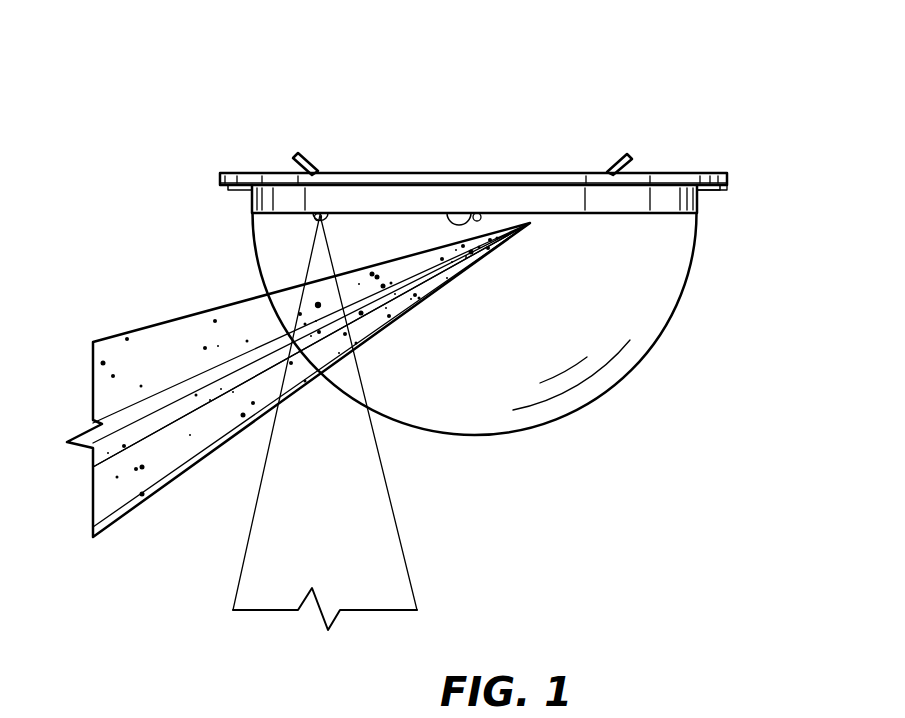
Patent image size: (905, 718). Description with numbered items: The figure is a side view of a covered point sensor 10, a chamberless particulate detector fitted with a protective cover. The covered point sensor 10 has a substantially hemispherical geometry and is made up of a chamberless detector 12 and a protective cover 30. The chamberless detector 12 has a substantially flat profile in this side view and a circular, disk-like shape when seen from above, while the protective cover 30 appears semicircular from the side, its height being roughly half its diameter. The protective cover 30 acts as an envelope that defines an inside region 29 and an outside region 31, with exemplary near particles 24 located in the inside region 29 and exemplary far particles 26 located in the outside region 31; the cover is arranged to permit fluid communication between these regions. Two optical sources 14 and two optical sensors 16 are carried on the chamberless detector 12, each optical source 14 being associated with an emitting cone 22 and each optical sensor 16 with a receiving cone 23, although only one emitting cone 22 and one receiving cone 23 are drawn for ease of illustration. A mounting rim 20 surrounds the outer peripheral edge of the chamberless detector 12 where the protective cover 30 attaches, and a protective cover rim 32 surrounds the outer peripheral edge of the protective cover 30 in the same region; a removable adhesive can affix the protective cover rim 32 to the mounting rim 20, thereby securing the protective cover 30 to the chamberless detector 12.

The covered point sensor 10 is at (130, 82).
The chamberless detector 12 is at (558, 173).
The optical sources 14 is at (300, 154).
The optical sensors 16 is at (333, 223).
The mounting rim 20 is at (727, 190).
The emitting cone 22 is at (210, 310).
The receiving cone 23 is at (248, 546).
The near particles 24 is at (320, 306).
The far particles 26 is at (306, 375).
The inside region 29 is at (628, 264).
The protective cover 30 is at (593, 402).
The outside region 31 is at (664, 373).
The protective cover rim 32 is at (703, 190).